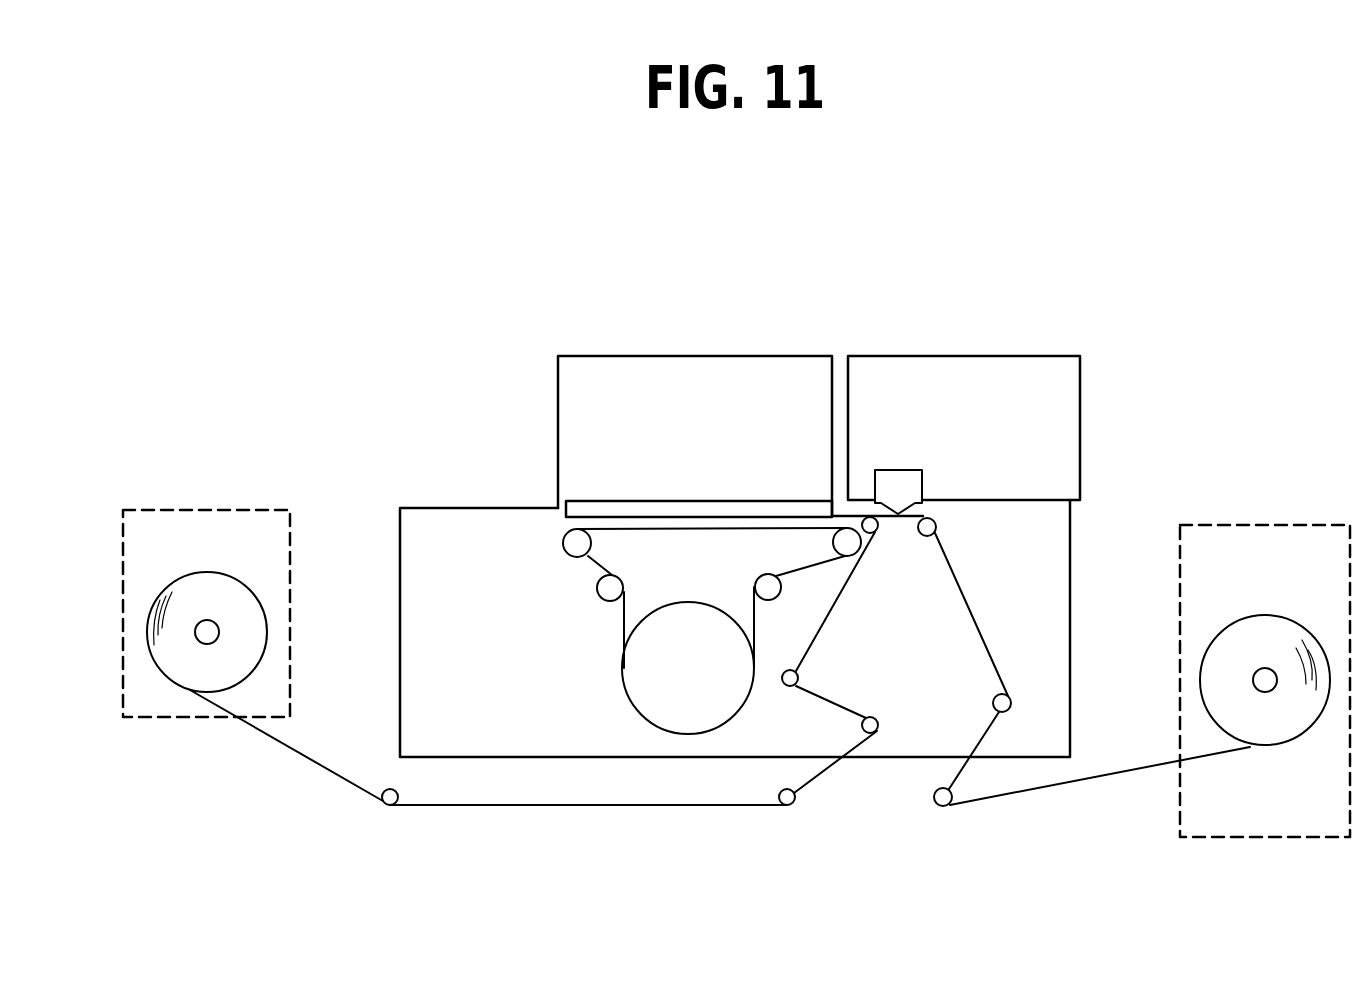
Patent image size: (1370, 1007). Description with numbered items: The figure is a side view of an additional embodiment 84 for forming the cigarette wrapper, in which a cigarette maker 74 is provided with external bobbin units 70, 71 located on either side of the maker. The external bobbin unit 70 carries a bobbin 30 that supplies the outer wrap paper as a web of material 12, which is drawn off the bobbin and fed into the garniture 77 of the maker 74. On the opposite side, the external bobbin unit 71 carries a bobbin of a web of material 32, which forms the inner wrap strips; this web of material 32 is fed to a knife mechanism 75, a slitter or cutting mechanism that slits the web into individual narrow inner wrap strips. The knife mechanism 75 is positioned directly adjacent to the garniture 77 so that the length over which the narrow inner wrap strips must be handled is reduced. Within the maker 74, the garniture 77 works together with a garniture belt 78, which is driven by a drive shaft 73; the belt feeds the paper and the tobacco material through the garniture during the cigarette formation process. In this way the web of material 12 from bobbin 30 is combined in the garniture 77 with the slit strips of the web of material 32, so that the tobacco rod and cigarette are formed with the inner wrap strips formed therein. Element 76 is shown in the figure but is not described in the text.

The web of material 12 is at (836, 597).
The bobbin 30 is at (250, 633).
The web of material 32 is at (970, 612).
The external bobbin unit 70 is at (200, 508).
The external bobbin unit 71 is at (1255, 523).
The drive shaft 73 is at (658, 700).
The cigarette maker 74 is at (460, 470).
The knife mechanism 75 is at (900, 470).
The treatment unit 76 is at (1005, 388).
The garniture 77 is at (548, 532).
The garniture belt 78 is at (592, 570).
The additional embodiment 84 is at (848, 305).